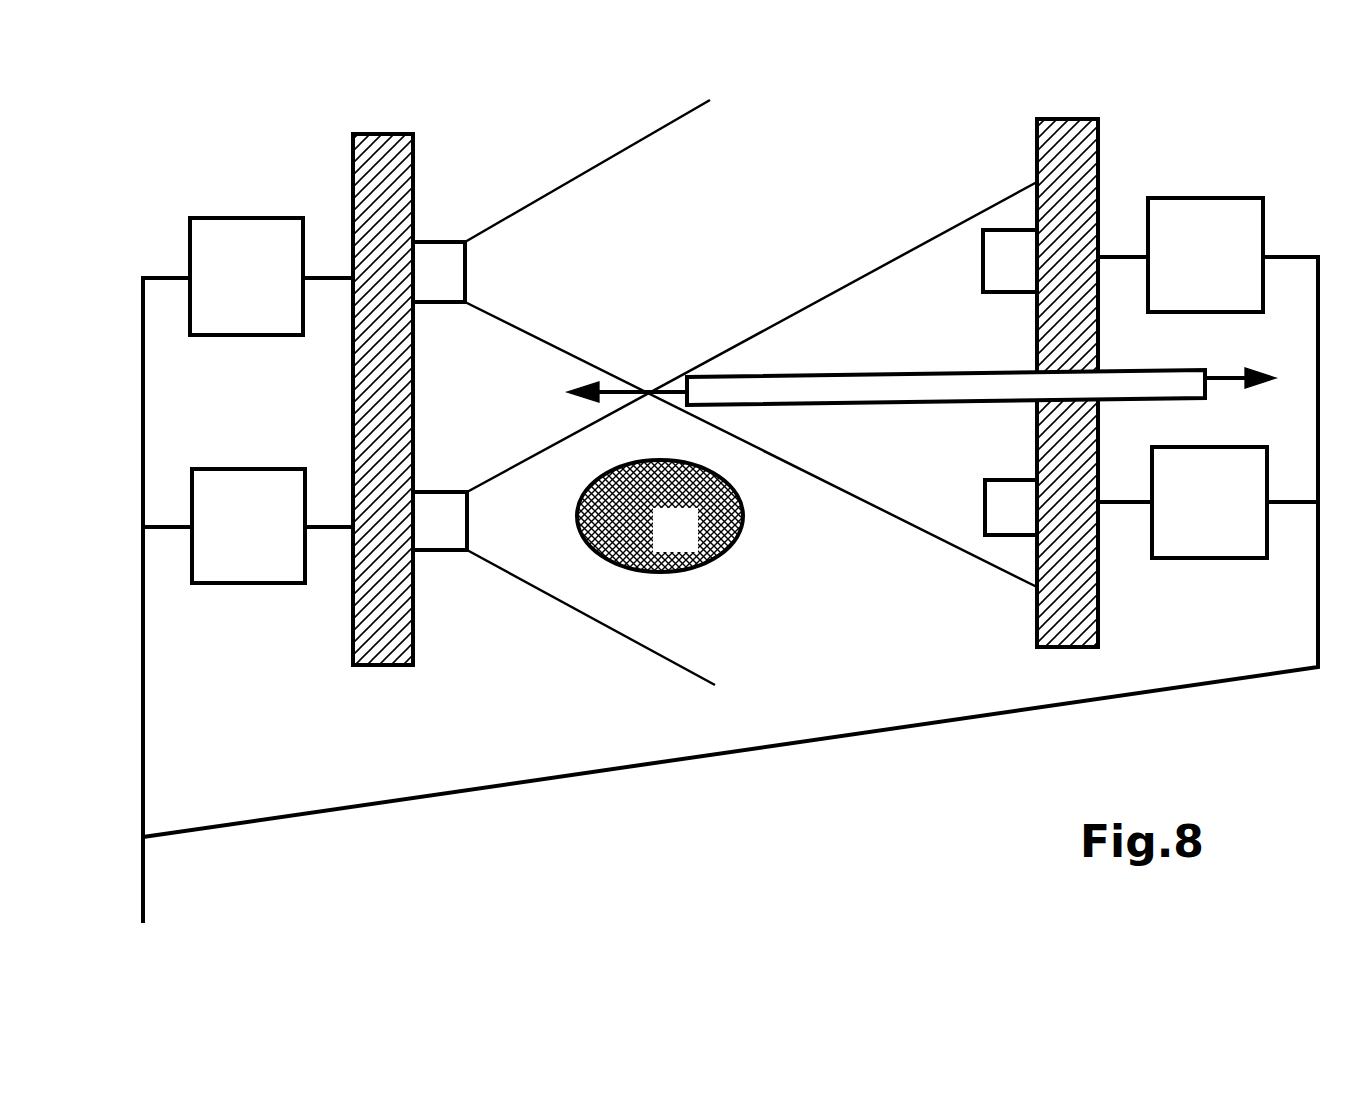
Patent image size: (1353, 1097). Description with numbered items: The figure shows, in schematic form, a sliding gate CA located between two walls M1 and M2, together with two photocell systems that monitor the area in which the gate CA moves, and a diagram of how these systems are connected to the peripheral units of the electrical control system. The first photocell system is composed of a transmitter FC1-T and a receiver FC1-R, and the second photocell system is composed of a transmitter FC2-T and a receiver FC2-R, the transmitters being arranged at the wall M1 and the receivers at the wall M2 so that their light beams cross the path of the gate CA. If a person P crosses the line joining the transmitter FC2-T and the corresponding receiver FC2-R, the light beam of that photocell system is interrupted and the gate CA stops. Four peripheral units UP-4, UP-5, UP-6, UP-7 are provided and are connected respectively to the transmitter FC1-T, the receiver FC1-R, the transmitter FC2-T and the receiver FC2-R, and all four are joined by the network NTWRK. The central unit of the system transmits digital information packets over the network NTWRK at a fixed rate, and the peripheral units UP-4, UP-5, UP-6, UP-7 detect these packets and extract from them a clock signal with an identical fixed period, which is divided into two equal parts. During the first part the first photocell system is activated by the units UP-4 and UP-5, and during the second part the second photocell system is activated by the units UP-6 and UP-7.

The peripheral unit UP-4 is at (271, 276).
The peripheral unit UP-5 is at (1180, 255).
The peripheral unit UP-6 is at (272, 526).
The peripheral unit UP-7 is at (1182, 502).
The wall M1 is at (354, 407).
The wall M2 is at (1098, 391).
The transmitter FC1-T is at (725, 343).
The transmitter FC2-T is at (725, 433).
The receiver FC1-R is at (984, 285).
The receiver FC2-R is at (984, 483).
The sliding gate CA is at (921, 369).
The person P is at (660, 516).
The network NTWRK is at (730, 590).